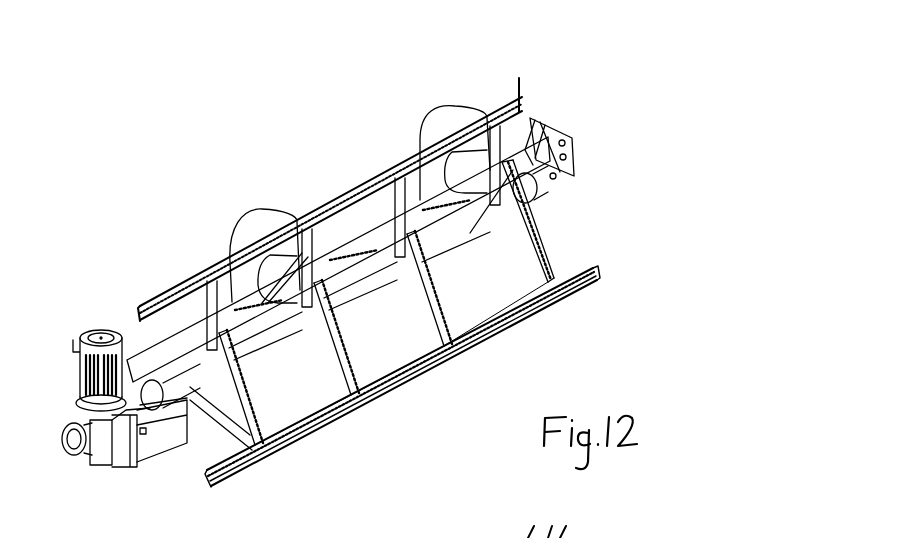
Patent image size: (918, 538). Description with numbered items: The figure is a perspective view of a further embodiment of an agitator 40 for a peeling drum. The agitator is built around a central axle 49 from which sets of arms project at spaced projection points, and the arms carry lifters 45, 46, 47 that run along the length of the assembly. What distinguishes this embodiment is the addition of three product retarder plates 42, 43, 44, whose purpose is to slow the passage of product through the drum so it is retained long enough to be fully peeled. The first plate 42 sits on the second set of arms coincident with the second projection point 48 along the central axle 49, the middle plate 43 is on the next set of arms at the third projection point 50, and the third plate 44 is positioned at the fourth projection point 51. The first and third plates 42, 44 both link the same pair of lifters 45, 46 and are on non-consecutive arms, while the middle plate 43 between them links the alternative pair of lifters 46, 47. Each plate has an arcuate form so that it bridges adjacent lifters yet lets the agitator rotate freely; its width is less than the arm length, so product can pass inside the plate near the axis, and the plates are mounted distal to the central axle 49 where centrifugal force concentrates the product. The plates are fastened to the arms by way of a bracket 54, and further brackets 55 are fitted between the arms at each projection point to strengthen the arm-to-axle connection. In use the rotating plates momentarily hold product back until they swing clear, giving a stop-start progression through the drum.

The agitator 40 is at (125, 245).
The first plate 42 is at (265, 222).
The middle plate 43 is at (418, 340).
The third plate 44 is at (450, 118).
The lifter 45 is at (175, 282).
The lifter 46 is at (158, 352).
The lifter 47 is at (528, 316).
The second projection point 48 is at (300, 316).
The central axle 49 is at (362, 296).
The third projection point 50 is at (393, 262).
The fourth projection point 51 is at (487, 212).
The bracket 54 is at (236, 272).
The bracket 55 is at (462, 180).